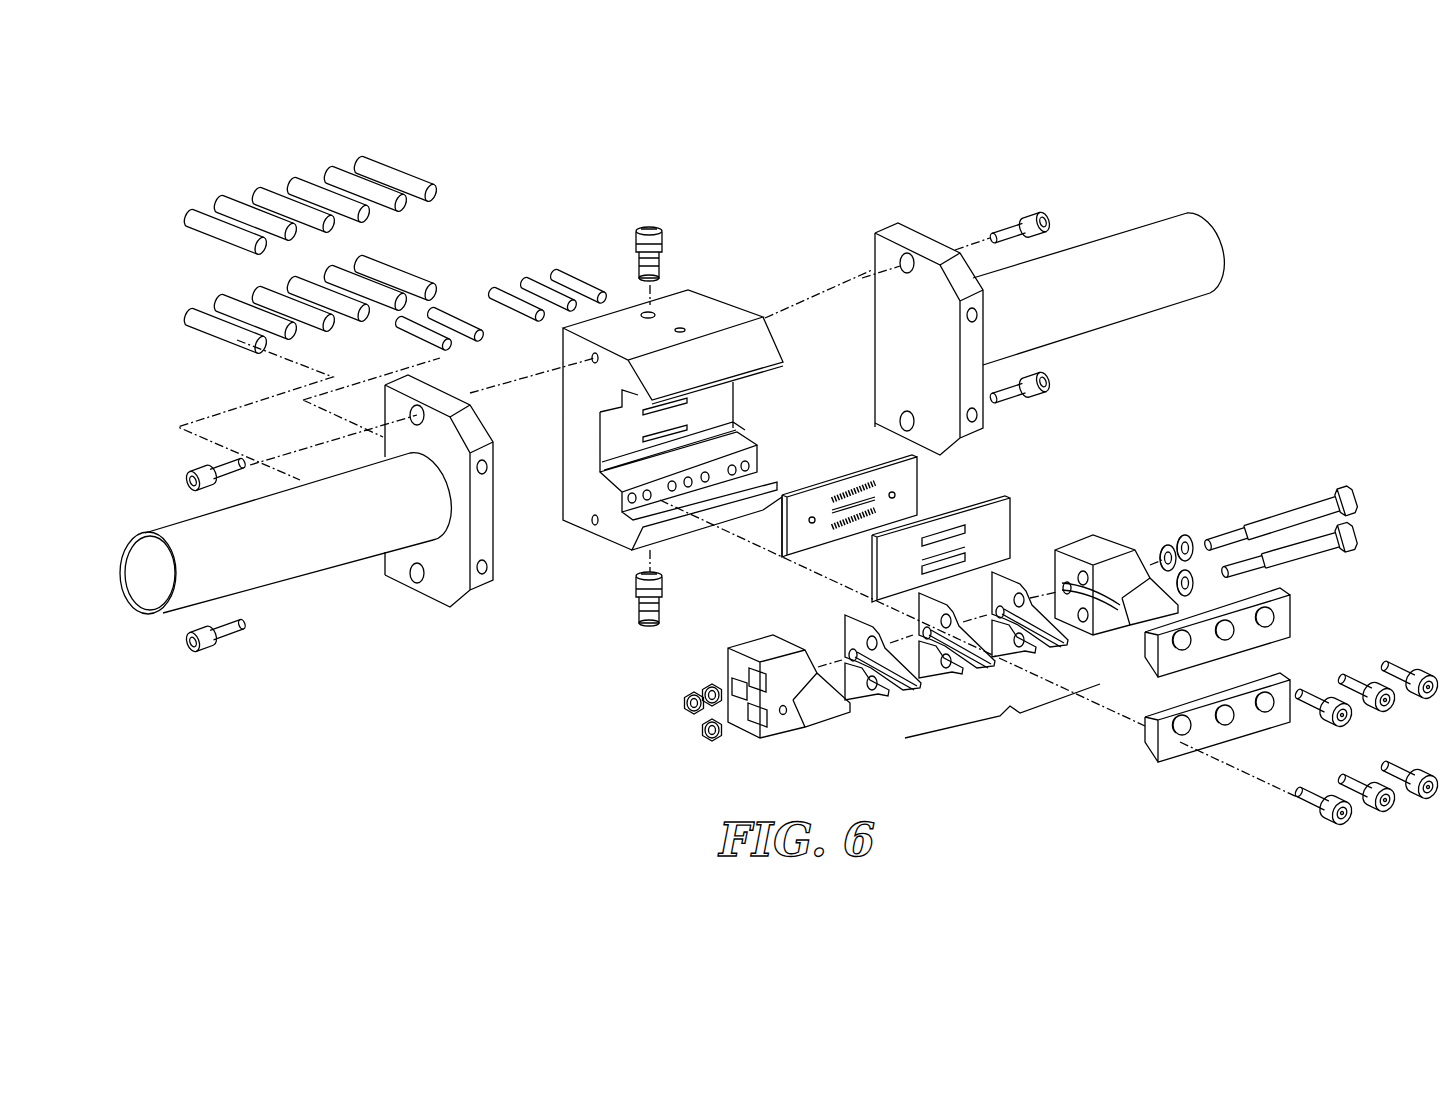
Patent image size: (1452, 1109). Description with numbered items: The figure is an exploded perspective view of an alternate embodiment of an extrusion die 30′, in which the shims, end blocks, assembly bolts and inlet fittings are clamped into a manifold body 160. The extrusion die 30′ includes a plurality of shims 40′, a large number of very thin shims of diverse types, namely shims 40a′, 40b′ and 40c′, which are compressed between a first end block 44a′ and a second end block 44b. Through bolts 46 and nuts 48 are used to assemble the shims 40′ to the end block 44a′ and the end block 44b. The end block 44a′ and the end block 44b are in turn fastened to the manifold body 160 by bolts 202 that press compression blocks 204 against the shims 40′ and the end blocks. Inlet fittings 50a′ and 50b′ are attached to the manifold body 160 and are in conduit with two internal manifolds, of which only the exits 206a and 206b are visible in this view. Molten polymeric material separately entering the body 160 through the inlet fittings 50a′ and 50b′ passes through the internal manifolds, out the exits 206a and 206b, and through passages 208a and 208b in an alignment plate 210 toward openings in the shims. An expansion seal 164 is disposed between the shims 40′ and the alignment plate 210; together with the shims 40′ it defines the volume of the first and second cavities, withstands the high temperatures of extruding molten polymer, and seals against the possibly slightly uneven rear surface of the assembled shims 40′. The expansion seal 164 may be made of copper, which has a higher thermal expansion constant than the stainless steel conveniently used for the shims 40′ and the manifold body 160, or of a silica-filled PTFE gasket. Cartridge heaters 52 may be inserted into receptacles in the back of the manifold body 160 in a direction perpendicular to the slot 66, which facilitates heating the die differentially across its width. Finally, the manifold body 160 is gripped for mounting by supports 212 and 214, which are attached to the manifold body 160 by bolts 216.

The cartridge heaters 52 is at (398, 187).
The inlet fitting 50a′ is at (649, 224).
The inlet fitting 50b′ is at (638, 622).
The manifold body 160 is at (695, 295).
The bolts 216 is at (222, 637).
The support 214 is at (1152, 233).
The support 212 is at (297, 568).
The exit 206a is at (687, 401).
The exit 206b is at (687, 428).
The passage 208a is at (851, 490).
The passage 208b is at (875, 510).
The alignment plate 210 is at (895, 497).
The expansion seal 164 is at (1005, 513).
The end block 44a′ is at (770, 731).
The end block 44b is at (1108, 541).
The nuts 48 is at (684, 703).
The shim 40a′ is at (878, 695).
The shim 40b′ is at (950, 675).
The shim 40c′ is at (1023, 651).
The plurality of shims 40′ is at (1002, 716).
The through bolts 46 is at (1298, 508).
The slot 66 is at (1067, 643).
The compression blocks 204 is at (1290, 690).
The bolts 202 is at (1318, 802).
The extrusion die 30′ is at (505, 722).